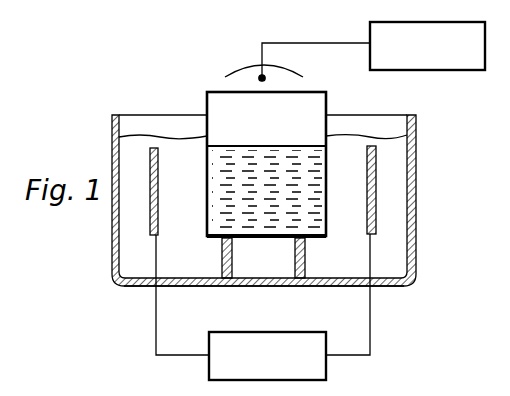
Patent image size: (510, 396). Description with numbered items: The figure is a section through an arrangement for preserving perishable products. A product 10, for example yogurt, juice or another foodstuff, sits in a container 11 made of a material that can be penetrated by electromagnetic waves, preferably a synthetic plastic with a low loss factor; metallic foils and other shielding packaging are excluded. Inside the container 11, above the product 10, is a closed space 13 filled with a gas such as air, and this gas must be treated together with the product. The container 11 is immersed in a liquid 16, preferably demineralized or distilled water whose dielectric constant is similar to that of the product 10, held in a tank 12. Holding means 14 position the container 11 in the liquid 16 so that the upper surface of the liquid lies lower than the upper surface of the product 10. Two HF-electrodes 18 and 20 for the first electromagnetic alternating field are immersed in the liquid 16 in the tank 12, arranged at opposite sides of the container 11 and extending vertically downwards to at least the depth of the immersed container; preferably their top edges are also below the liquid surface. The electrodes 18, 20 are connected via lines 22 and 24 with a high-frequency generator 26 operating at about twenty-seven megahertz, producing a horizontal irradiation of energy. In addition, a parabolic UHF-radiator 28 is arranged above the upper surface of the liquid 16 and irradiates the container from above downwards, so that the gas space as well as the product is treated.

The product 10 is at (210, 216).
The container 11 is at (252, 238).
The tank 12 is at (417, 162).
The closed space 13 is at (321, 104).
The holding means 14 is at (221, 251).
The liquid 16 is at (400, 258).
The electrode 18 is at (367, 208).
The electrode 20 is at (158, 193).
The line 22 is at (371, 320).
The line 24 is at (155, 316).
The high-frequency generator 26 is at (328, 367).
The parabolic UHF-radiator 28 is at (244, 66).